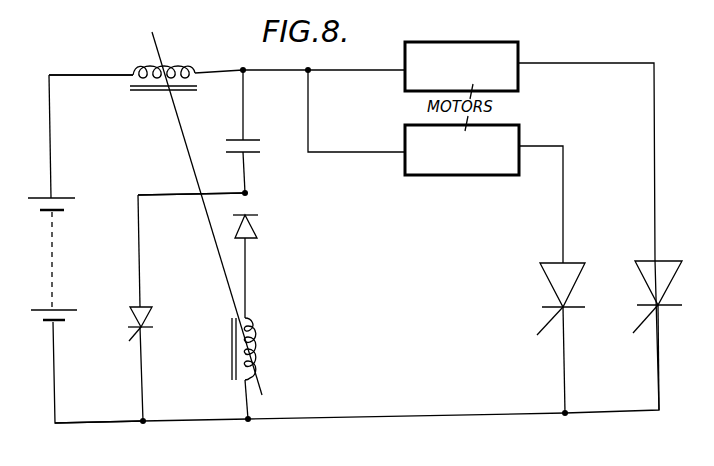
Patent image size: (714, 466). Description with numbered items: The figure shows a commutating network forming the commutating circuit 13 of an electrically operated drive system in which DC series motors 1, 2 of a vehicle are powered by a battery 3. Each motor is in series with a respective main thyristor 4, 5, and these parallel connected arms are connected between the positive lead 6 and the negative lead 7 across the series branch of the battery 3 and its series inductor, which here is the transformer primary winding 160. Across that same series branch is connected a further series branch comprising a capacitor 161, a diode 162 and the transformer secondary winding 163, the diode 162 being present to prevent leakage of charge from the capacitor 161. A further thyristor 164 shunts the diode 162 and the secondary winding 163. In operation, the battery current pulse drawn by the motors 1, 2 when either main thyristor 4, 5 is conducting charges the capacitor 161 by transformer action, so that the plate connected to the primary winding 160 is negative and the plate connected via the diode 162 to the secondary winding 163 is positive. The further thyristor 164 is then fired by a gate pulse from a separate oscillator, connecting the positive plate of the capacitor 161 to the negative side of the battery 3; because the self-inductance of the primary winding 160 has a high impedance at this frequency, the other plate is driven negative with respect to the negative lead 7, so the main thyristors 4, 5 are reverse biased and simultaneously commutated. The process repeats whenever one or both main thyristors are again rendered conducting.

The DC series motor 1 is at (407, 78).
The DC series motor 2 is at (422, 163).
The battery 3 is at (58, 270).
The main thyristor 4 is at (650, 282).
The main thyristor 5 is at (547, 273).
The positive lead 6 is at (95, 75).
The negative lead 7 is at (107, 422).
The commutating circuit 13 is at (143, 99).
The transformer primary winding 160 is at (148, 63).
The capacitor 161 is at (248, 133).
The diode 162 is at (258, 230).
The transformer secondary winding 163 is at (256, 342).
The further thyristor 164 is at (134, 319).